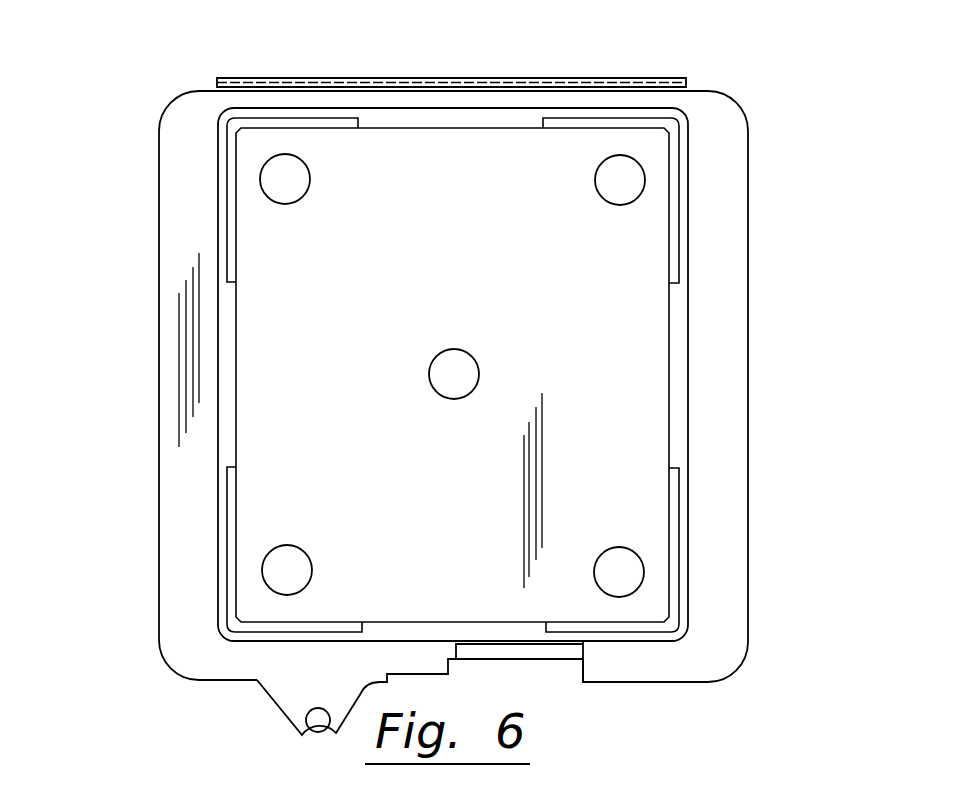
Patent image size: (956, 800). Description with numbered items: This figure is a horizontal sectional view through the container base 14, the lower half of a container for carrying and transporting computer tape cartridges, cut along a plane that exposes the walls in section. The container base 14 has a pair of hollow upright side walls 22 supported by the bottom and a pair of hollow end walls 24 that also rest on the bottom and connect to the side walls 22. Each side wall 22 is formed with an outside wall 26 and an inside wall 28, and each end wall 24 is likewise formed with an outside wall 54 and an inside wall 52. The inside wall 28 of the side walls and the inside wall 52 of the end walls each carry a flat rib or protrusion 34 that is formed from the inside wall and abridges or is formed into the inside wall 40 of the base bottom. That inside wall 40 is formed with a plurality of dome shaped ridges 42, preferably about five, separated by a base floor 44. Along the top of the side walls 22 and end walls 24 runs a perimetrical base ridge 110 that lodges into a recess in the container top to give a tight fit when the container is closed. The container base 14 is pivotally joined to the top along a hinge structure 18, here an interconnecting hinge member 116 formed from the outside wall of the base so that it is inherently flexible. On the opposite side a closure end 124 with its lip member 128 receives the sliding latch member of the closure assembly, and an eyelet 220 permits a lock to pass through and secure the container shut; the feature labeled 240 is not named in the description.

The container base 14 is at (446, 387).
The hinge structure 18 is at (685, 68).
The hollow upright side wall 22 is at (769, 447).
The hollow end wall 24 is at (193, 698).
The outside wall 26 is at (158, 396).
The inside wall 28 is at (233, 553).
The flat rib or protrusion 34 is at (487, 122).
The inside wall 40 is at (600, 397).
The dome shaped ridge 42 is at (285, 178).
The base floor 44 is at (613, 340).
The inside wall 52 is at (306, 124).
The outside wall 54 is at (700, 90).
The perimetrical base ridge 110 is at (222, 600).
The interconnecting hinge member 116 is at (585, 78).
The closure end 124 is at (536, 651).
The lip member 128 is at (567, 660).
The eyelet 220 is at (317, 717).
The notch 240 is at (298, 692).